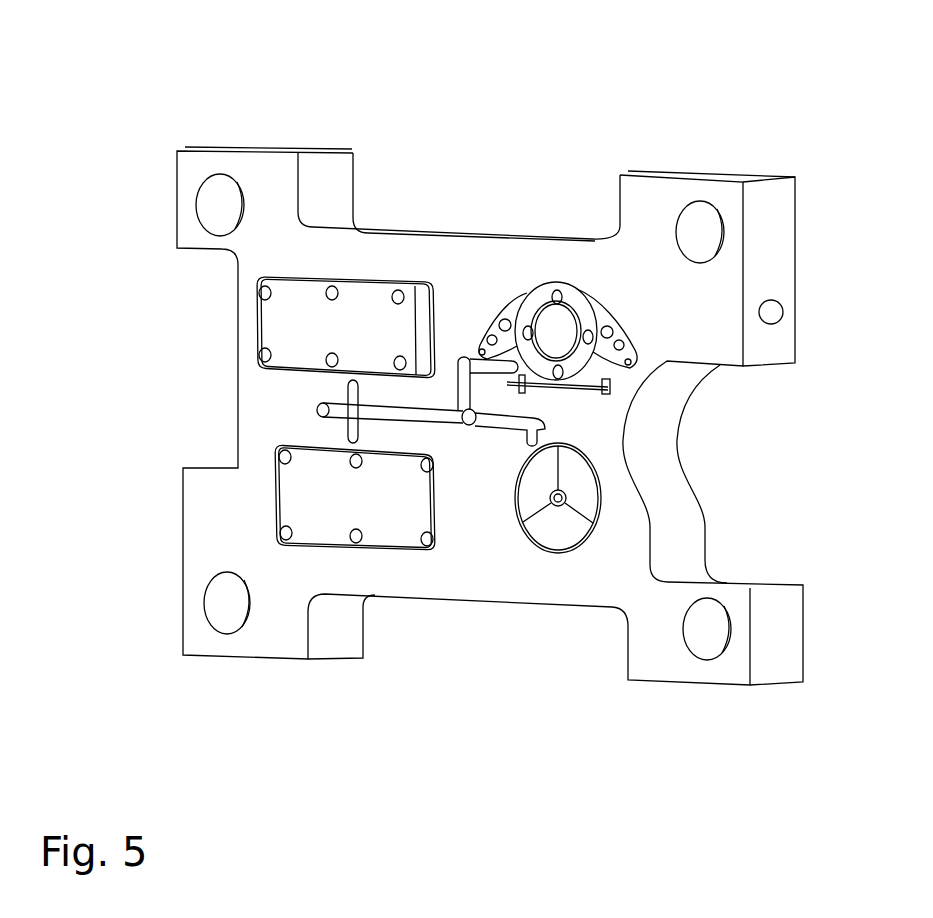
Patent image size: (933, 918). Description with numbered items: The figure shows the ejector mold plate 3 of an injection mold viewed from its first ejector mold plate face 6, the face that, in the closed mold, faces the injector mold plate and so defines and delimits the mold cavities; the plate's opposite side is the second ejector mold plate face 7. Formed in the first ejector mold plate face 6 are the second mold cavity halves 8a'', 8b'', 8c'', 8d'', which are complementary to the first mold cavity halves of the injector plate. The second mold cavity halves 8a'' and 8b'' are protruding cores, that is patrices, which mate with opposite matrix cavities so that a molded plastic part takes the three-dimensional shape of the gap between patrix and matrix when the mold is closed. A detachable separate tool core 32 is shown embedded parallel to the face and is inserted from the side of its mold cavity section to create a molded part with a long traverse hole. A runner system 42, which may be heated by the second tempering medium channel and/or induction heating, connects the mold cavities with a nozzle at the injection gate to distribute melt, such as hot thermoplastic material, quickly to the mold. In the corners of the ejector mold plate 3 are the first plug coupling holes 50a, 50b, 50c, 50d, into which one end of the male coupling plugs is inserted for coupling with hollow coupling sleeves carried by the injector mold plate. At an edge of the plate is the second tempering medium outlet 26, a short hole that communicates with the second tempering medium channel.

The ejector mold plate 3 is at (532, 92).
The first ejector mold plate face 6 is at (488, 262).
The second ejector mold plate face 7 is at (450, 228).
The second mold cavity half 8a'' is at (380, 559).
The second mold cavity half 8b'' is at (346, 251).
The second mold cavity half 8c'' is at (558, 272).
The second mold cavity half 8d'' is at (558, 558).
The second tempering medium outlet 26 is at (771, 312).
The detachable separate tool core 32 is at (600, 392).
The runner system 42 is at (320, 410).
The first plug coupling hole 50a is at (705, 232).
The first plug coupling hole 50b is at (222, 208).
The first plug coupling hole 50c is at (227, 605).
The first plug coupling hole 50d is at (707, 650).